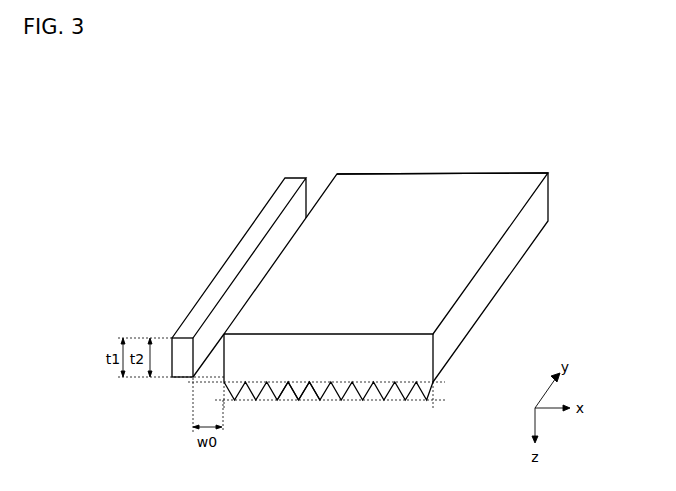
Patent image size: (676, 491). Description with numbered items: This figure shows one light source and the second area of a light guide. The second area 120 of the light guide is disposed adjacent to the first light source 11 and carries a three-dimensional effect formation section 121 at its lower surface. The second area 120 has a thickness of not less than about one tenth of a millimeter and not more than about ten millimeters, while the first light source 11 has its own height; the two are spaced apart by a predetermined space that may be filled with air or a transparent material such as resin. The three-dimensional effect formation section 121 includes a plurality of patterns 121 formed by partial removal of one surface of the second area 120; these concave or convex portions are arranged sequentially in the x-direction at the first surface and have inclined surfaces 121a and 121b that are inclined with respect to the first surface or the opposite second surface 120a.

The second area 120 is at (552, 195).
The second surface 120a is at (437, 180).
The three-dimensional effect formation section 121 is at (392, 401).
The inclined surface 121a is at (283, 401).
The inclined surface 121b is at (299, 402).
The first light source 11 is at (181, 379).